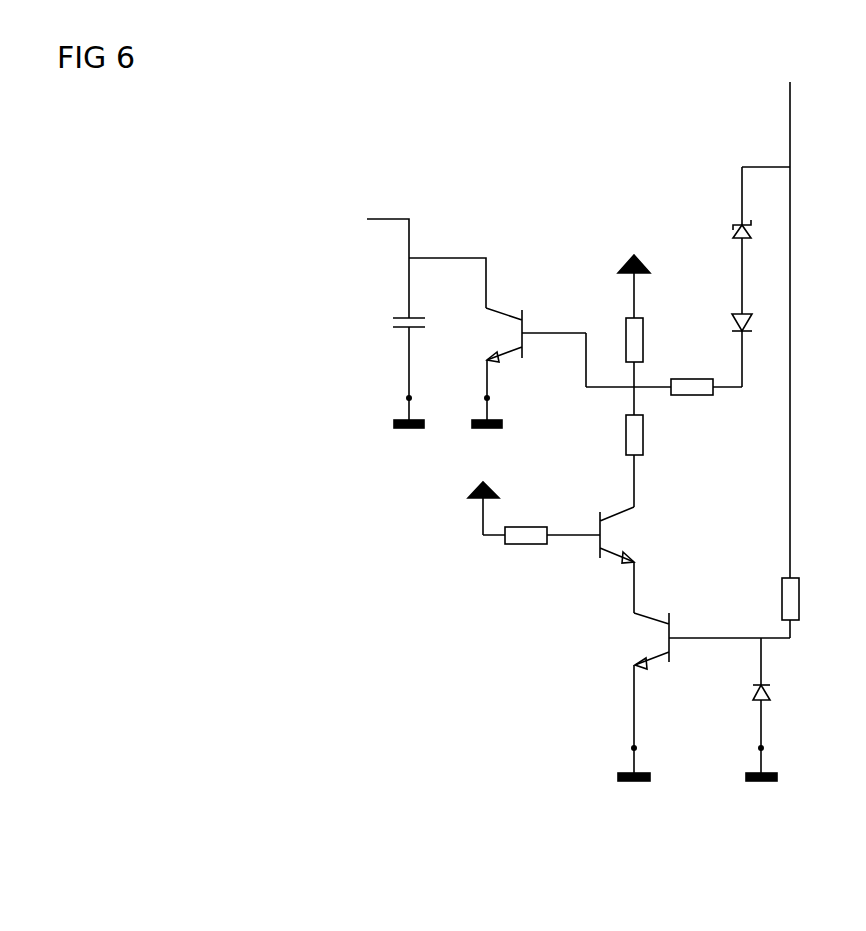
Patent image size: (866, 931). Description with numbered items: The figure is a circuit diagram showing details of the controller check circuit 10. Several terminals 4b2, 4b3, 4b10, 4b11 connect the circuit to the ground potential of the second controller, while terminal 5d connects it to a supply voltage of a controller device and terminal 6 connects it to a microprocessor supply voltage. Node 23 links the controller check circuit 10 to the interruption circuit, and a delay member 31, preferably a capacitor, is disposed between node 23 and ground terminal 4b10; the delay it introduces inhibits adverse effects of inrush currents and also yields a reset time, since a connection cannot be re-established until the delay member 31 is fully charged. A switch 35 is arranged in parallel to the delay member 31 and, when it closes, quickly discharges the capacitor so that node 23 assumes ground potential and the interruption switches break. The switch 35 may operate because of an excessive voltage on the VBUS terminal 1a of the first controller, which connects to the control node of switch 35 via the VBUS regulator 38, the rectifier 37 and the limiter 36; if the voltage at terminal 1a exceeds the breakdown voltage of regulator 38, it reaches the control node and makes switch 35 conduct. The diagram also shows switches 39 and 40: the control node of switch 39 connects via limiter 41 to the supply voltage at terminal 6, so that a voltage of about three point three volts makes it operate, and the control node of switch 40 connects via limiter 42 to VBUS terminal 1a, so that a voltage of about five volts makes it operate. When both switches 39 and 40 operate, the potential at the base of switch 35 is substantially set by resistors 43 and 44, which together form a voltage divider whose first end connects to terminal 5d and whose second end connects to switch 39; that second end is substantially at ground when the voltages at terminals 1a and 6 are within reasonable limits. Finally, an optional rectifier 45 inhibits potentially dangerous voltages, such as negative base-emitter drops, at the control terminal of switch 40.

The controller check circuit 10 is at (277, 548).
The VBUS terminal 1a is at (775, 344).
The node 23 is at (408, 260).
The delay member 31 is at (388, 365).
The switch 35 is at (528, 364).
The limiter 36 is at (664, 384).
The rectifier 37 is at (721, 350).
The VBUS regulator 38 is at (720, 240).
The switch 39 is at (627, 560).
The switch 40 is at (701, 693).
The limiter 41 is at (541, 555).
The limiter 42 is at (810, 599).
The resistor 43 is at (614, 461).
The resistor 44 is at (614, 366).
The rectifier 45 is at (780, 705).
The terminal 5d is at (647, 276).
The terminal 6 is at (472, 507).
The terminal 4b2 is at (633, 783).
The terminal 4b3 is at (759, 783).
The terminal 4b10 is at (409, 431).
The terminal 4b11 is at (484, 431).